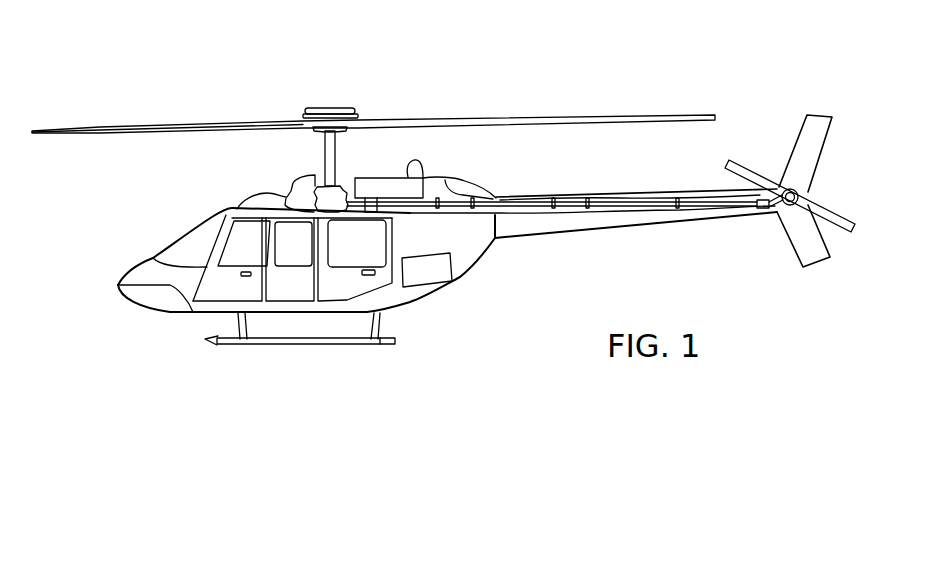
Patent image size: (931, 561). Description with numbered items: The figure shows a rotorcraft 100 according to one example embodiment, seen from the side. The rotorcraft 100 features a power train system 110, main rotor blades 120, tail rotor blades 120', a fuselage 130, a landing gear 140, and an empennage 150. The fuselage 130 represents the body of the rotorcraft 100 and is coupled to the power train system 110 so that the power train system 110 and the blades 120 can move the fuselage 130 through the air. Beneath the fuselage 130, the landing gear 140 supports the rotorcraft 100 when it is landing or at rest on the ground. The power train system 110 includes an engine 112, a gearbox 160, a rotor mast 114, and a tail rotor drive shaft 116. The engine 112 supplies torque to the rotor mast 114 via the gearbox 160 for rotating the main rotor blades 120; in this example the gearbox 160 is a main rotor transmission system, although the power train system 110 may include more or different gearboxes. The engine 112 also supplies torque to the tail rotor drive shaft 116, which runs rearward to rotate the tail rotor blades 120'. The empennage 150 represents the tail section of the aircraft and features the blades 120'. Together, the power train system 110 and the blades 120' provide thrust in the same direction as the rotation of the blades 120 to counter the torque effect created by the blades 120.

The rotorcraft 100 is at (195, 56).
The power train system 110 is at (353, 94).
The engine 112 is at (427, 185).
The rotor mast 114 is at (325, 162).
The tail rotor drive shaft 116 is at (634, 203).
The main rotor blades 120 is at (373, 100).
The tail rotor blades 120' is at (790, 176).
The fuselage 130 is at (427, 294).
The landing gear 140 is at (232, 347).
The empennage 150 is at (573, 231).
The gearbox 160 is at (300, 200).